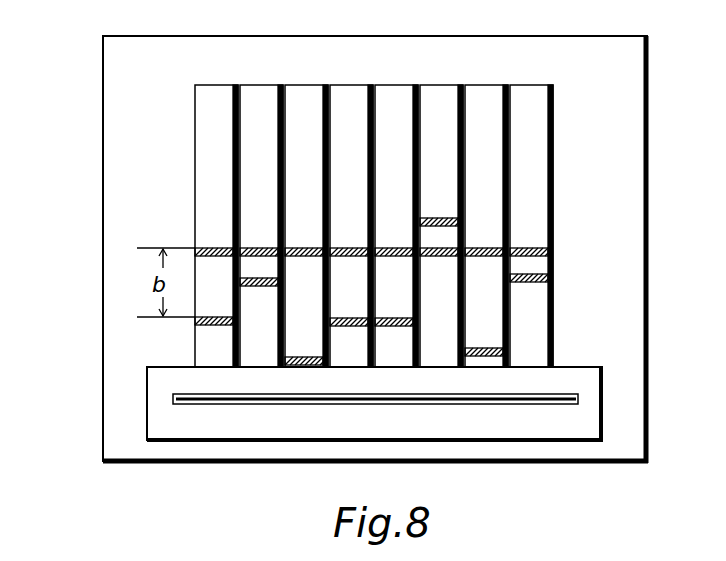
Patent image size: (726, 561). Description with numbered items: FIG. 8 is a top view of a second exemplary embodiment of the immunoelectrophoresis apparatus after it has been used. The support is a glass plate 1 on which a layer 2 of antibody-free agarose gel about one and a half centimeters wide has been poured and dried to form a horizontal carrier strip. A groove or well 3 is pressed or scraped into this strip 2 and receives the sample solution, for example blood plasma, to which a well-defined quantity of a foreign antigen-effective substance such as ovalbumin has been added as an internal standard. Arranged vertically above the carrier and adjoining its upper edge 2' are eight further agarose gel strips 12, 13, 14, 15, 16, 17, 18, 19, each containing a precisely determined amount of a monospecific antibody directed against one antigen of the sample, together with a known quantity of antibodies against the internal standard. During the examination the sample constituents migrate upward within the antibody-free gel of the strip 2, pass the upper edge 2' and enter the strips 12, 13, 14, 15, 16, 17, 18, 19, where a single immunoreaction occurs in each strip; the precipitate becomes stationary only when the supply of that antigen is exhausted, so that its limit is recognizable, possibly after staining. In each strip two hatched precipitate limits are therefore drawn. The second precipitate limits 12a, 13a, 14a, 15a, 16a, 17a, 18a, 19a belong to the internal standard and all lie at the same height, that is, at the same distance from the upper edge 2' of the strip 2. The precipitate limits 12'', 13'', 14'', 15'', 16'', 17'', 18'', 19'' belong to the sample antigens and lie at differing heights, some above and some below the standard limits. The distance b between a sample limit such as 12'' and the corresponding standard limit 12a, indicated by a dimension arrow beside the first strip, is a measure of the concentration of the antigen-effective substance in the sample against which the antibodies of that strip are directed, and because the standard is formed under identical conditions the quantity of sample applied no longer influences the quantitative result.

The glass plate 1 is at (628, 78).
The layer 2 is at (375, 432).
The upper edge 2' is at (374, 338).
The well 3 is at (506, 402).
The strip 12 is at (216, 205).
The strip 13 is at (261, 205).
The strip 14 is at (306, 205).
The strip 15 is at (351, 205).
The strip 16 is at (397, 205).
The strip 17 is at (441, 205).
The strip 18 is at (486, 205).
The strip 19 is at (532, 205).
The second precipitate limit 12a is at (209, 247).
The second precipitate limit 13a is at (254, 247).
The second precipitate limit 14a is at (300, 247).
The second precipitate limit 15a is at (344, 247).
The second precipitate limit 16a is at (389, 247).
The second precipitate limit 17a is at (440, 258).
The second precipitate limit 18a is at (479, 247).
The second precipitate limit 19a is at (523, 247).
The precipitate limit 12'' is at (214, 296).
The precipitate limit 13'' is at (259, 305).
The precipitate limit 14'' is at (304, 330).
The precipitate limit 15'' is at (349, 297).
The precipitate limit 16'' is at (394, 297).
The precipitate limit 17'' is at (439, 189).
The precipitate limit 18'' is at (484, 325).
The precipitate limit 19'' is at (529, 307).